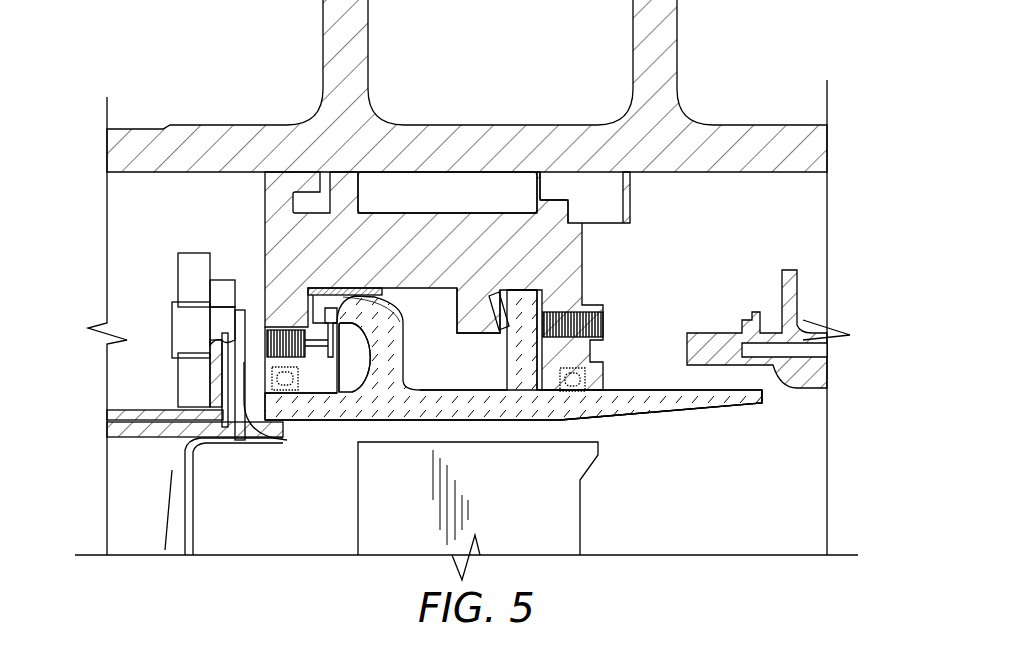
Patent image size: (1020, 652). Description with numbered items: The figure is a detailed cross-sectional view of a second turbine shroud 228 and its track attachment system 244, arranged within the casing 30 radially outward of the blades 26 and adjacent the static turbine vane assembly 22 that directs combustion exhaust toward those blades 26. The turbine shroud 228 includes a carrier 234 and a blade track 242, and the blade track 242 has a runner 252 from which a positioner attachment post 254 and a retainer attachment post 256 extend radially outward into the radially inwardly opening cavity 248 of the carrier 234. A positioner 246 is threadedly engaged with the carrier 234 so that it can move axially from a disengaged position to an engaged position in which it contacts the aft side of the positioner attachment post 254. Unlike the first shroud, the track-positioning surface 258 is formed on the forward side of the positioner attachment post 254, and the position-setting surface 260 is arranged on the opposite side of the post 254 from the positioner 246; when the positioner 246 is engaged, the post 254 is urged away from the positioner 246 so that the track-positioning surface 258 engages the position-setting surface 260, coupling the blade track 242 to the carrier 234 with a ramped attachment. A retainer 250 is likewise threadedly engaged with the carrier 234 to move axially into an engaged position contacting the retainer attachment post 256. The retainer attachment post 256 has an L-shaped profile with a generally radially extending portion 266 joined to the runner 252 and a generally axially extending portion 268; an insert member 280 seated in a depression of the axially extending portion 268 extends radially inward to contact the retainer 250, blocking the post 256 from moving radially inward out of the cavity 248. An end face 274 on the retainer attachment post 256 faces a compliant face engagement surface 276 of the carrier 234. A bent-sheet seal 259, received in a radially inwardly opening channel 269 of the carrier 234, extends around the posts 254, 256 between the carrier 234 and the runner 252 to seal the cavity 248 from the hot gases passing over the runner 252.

The static turbine vane assembly 22 is at (175, 527).
The blades 26 is at (548, 545).
The casing 30 is at (762, 143).
The turbine shroud 228 is at (246, 222).
The carrier 234 is at (437, 248).
The blade track 242 is at (697, 412).
The track attachment system 244 is at (640, 294).
The positioner 246 is at (550, 310).
The cavity 248 is at (403, 285).
The retainer 250 is at (342, 333).
The runner 252 is at (618, 430).
The positioner attachment post 254 is at (520, 380).
The retainer attachment post 256 is at (388, 380).
The track-positioning surface 258 is at (510, 298).
The bent-sheet seal 259 is at (577, 396).
The position-setting surface 260 is at (482, 318).
The generally radially extending portion 266 is at (392, 353).
The generally axially extending portion 268 is at (347, 314).
The radially-inwardly opening channel 269 is at (292, 397).
The end face 274 is at (330, 300).
The face engagement surface 276 is at (363, 283).
The insert member 280 is at (318, 357).